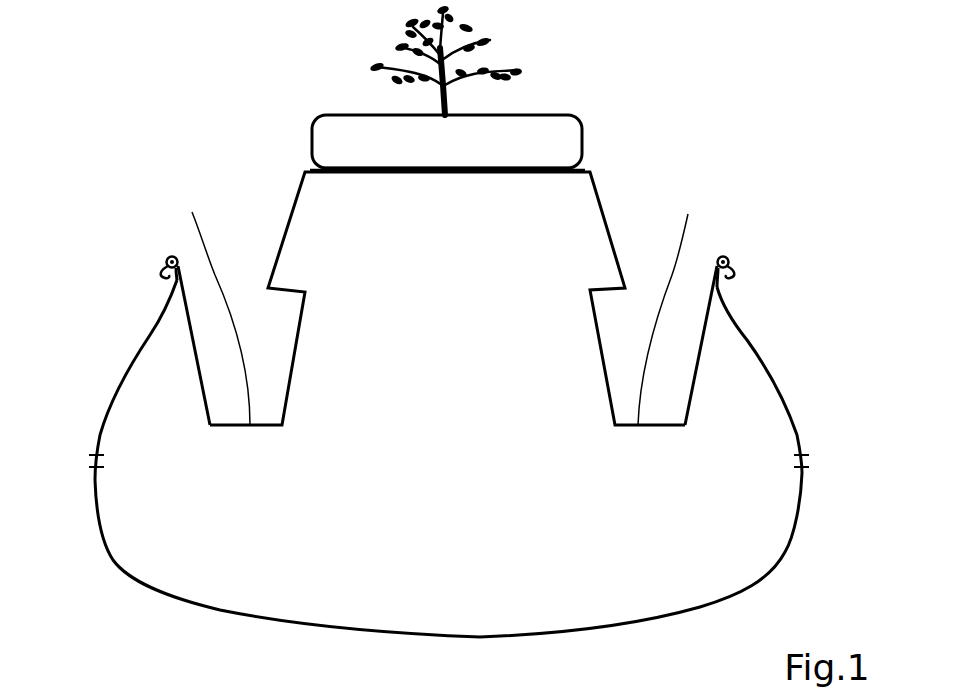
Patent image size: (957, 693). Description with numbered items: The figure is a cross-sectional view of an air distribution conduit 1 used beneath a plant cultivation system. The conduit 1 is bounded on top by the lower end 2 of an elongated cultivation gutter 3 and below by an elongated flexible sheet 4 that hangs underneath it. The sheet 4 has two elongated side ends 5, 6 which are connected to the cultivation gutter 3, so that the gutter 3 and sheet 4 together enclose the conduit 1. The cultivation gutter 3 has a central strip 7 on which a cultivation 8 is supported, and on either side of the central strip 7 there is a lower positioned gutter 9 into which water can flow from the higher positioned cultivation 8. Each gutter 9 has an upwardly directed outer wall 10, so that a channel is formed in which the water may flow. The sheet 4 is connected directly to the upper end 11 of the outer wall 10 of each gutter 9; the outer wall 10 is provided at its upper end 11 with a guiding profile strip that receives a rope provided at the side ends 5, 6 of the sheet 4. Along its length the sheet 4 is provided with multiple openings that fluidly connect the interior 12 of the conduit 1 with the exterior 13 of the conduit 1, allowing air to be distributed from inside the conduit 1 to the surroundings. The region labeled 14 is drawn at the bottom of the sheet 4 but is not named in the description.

The air distribution conduit 1 is at (760, 390).
The lower end 2 is at (347, 172).
The elongated cultivation gutter 3 is at (600, 197).
The elongated flexible sheet 4 is at (795, 532).
The side end 5 is at (174, 257).
The side end 6 is at (723, 257).
The central strip 7 is at (357, 168).
The cultivation 8 is at (558, 122).
The gutter 9 is at (443, 303).
The outer wall 10 is at (195, 343).
The upper end 11 is at (165, 263).
The interior 12 is at (90, 459).
The exterior 13 is at (431, 564).
The bottom surface 14 is at (534, 671).